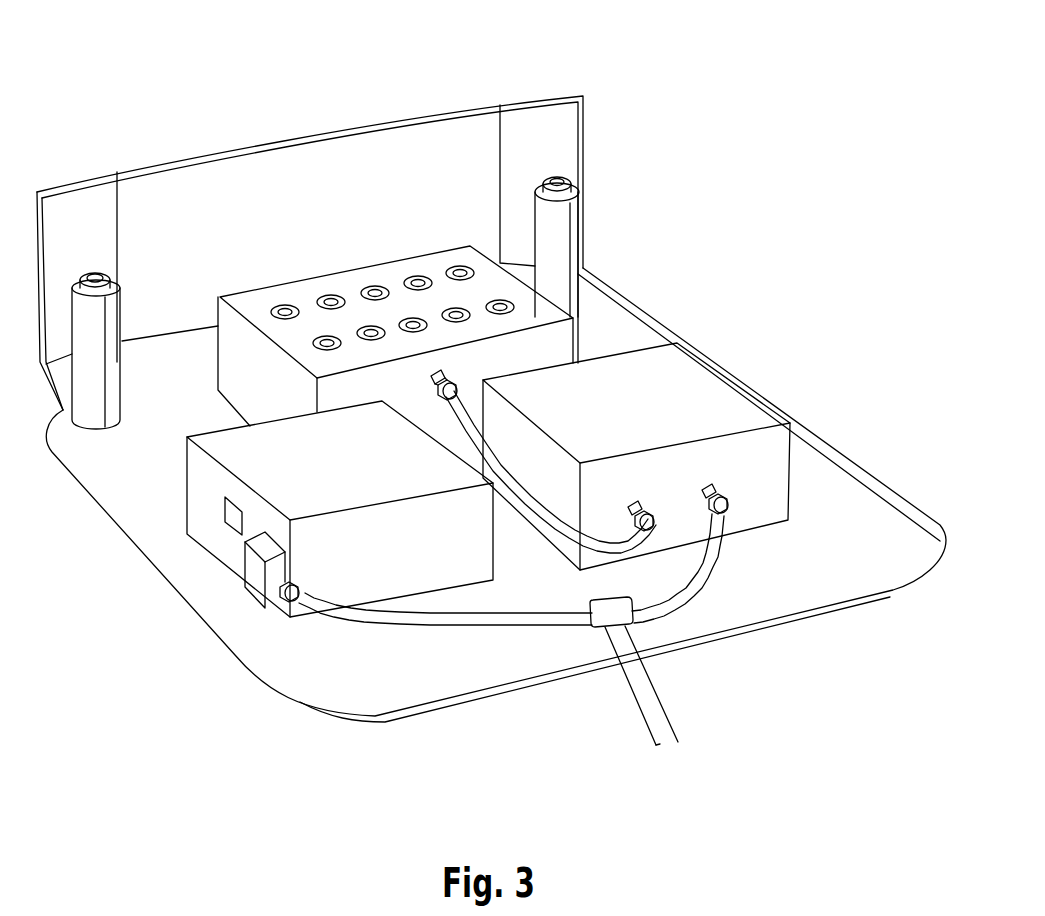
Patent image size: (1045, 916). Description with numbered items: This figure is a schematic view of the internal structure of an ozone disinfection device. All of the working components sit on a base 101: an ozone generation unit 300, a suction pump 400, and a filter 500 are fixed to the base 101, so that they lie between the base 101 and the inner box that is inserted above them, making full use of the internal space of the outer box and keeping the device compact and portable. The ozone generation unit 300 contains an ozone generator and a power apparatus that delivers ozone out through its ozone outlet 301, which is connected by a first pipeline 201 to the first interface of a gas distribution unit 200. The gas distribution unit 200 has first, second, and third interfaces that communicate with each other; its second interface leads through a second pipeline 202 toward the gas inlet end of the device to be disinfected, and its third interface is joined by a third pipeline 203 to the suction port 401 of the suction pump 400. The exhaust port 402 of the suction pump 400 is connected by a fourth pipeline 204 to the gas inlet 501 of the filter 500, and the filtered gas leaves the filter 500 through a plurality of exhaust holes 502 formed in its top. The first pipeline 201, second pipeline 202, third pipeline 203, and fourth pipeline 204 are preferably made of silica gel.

The base 101 is at (115, 487).
The gas distribution unit 200 is at (625, 612).
The first pipeline 201 is at (397, 627).
The second pipeline 202 is at (632, 685).
The third pipeline 203 is at (720, 555).
The fourth pipeline 204 is at (662, 525).
The ozone generation unit 300 is at (248, 468).
The ozone outlet 301 is at (290, 610).
The suction pump 400 is at (693, 377).
The suction port 401 is at (733, 500).
The exhaust port 402 is at (652, 510).
The filter 500 is at (248, 300).
The gas inlet 501 is at (452, 383).
The exhaust holes 502 is at (322, 298).